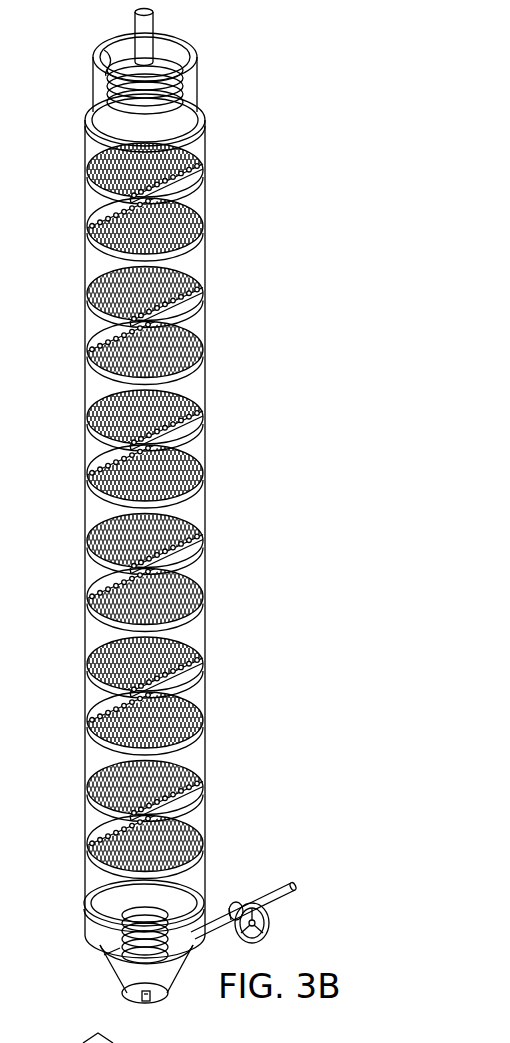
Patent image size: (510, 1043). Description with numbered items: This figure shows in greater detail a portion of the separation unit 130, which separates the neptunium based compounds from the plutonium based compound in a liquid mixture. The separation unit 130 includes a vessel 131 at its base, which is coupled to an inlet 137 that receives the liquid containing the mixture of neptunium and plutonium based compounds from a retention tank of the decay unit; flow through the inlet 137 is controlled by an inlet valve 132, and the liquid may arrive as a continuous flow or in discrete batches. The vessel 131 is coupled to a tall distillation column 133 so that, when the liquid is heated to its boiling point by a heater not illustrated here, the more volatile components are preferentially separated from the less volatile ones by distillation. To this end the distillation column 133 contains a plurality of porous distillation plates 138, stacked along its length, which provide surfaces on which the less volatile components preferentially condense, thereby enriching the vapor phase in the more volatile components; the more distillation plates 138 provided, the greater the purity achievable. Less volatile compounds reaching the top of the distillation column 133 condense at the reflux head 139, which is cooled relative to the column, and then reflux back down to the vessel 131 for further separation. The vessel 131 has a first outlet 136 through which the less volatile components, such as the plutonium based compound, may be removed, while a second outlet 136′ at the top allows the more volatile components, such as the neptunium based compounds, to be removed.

The separation unit 130 is at (195, 200).
The vessel 131 is at (100, 950).
The inlet valve 132 is at (237, 902).
The distillation column 133 is at (185, 315).
The first outlet 136 is at (122, 1003).
The second outlet 136′ is at (150, 25).
The inlet 137 is at (283, 880).
The porous distillation plates 138 is at (205, 490).
The reflux head 139 is at (183, 88).